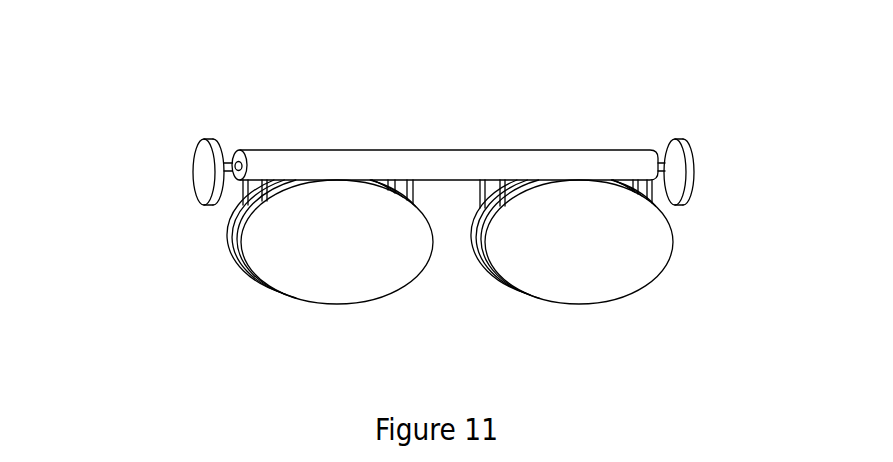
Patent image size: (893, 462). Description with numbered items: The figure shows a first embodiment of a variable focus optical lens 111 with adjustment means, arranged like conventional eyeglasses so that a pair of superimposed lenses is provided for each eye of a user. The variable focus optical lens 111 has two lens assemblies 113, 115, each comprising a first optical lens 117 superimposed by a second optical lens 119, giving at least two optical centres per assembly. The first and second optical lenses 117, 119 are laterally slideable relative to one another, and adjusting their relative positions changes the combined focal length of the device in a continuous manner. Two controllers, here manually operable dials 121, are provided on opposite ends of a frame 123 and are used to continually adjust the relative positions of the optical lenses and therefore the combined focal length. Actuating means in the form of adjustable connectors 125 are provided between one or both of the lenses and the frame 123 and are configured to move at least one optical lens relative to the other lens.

The variable focus optical lens 111 is at (126, 86).
The lens assembly 113 is at (328, 324).
The lens assembly 115 is at (589, 324).
The first optical lens 117 is at (293, 270).
The second optical lens 119 is at (228, 245).
The manually operable dial 121 is at (203, 177).
The frame 123 is at (537, 165).
The adjustable connector 125 is at (657, 193).